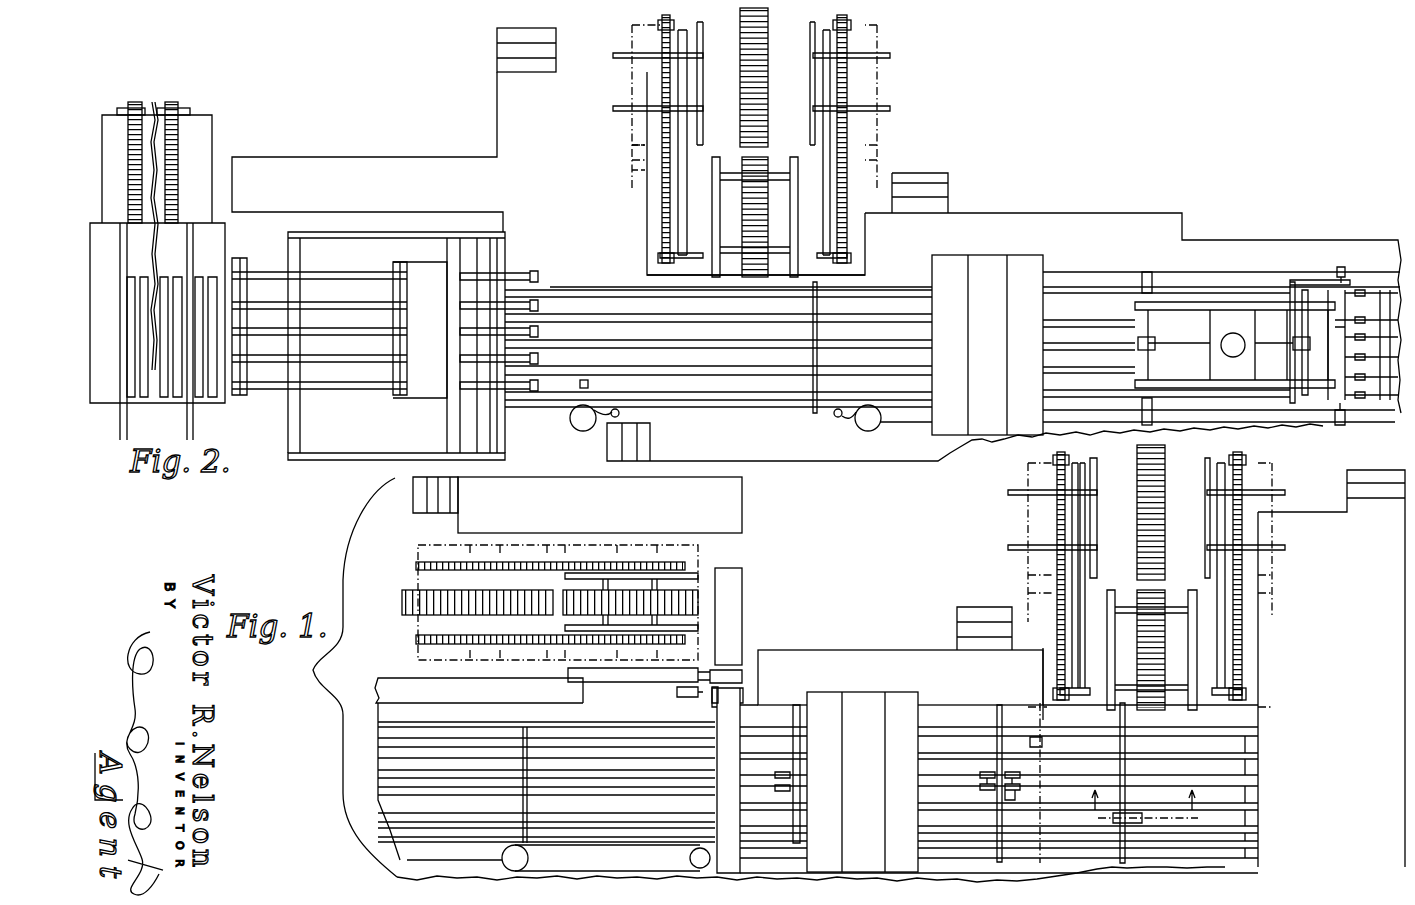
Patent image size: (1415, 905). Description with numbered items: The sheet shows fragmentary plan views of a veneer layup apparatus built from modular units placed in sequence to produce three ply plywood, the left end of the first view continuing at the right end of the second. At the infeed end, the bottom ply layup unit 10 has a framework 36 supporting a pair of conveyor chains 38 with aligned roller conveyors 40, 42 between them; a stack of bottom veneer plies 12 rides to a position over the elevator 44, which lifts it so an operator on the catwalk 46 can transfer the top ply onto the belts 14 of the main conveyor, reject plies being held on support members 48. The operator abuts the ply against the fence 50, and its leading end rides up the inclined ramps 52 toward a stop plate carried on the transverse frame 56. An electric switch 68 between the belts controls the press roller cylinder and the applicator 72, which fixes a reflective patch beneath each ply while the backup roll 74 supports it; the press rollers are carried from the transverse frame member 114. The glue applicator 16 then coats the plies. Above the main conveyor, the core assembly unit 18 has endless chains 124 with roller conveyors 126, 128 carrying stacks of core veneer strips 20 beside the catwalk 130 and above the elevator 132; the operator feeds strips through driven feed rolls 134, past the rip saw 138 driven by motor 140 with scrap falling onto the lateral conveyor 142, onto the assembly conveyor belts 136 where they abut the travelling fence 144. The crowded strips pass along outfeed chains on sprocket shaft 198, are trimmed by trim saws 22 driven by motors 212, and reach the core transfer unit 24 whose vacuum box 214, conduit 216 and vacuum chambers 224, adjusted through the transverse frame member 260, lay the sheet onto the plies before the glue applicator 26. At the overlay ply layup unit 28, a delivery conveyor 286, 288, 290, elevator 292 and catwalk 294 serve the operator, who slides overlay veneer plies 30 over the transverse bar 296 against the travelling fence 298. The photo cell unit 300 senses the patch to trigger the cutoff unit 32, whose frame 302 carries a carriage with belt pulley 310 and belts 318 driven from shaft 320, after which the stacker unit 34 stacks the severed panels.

In FIG. 1, the bottom ply layup unit 10 is at (946, 542).
In FIG. 1, the bottom veneer plies 12 is at (1275, 575).
In FIG. 1, the main conveyor belts 14 is at (1027, 792).
In FIG. 1, the glue applicator 16 is at (874, 668).
In FIG. 1, the core assembly unit 18 is at (807, 568).
In FIG. 1, the core veneer strips 20 is at (448, 552).
In FIG. 2, the trim saws 22 is at (1328, 332).
In FIG. 2, the core transfer unit 24 is at (1133, 298).
In FIG. 2, the glue applicator 26 is at (1060, 253).
In FIG. 2, the overlay ply layup unit 28 is at (798, 142).
In FIG. 2, the overlay veneer plies 30 is at (632, 172).
In FIG. 2, the cutoff unit 32 is at (411, 266).
In FIG. 2, the stacker unit 34 is at (251, 107).
In FIG. 1, the framework 36 is at (1166, 571).
In FIG. 1, the conveyor chains 38 is at (1057, 530).
In FIG. 1, the roller conveyor 40 is at (1145, 533).
In FIG. 1, the roller conveyor 42 is at (1138, 598).
In FIG. 1, the elevator 44 is at (1192, 595).
In FIG. 1, the catwalk 46 is at (1224, 668).
In FIG. 1, the support members 48 is at (1095, 505).
In FIG. 1, the fence 50 is at (1160, 843).
In FIG. 1, the inclined ramps 52 is at (1042, 742).
In FIG. 1, the transverse frame 56 is at (998, 845).
In FIG. 1, the electric switch 68 is at (1005, 796).
In FIG. 1, the applicator 72 is at (1130, 822).
In FIG. 1, the backup roll 74 is at (1128, 813).
In FIG. 1, the transverse frame member 114 is at (793, 718).
In FIG. 1, the endless chains 124 is at (416, 566).
In FIG. 1, the roller conveyor 126 is at (402, 605).
In FIG. 1, the roller conveyor 128 is at (700, 603).
In FIG. 1, the catwalk 130 is at (715, 522).
In FIG. 1, the elevator 132 is at (700, 628).
In FIG. 1, the feed rolls 134 is at (635, 684).
In FIG. 1, the assembly conveyor belts 136 is at (598, 825).
In FIG. 1, the rip saw 138 is at (712, 700).
In FIG. 1, the electric motor 140 is at (677, 694).
In FIG. 1, the lateral conveyor 142 is at (740, 862).
In FIG. 1, the travelling fence 144 is at (594, 848).
In FIG. 2, the sprocket shaft 198 is at (1305, 398).
In FIG. 2, the electric motors 212 is at (1341, 267).
In FIG. 2, the vacuum box 214 is at (1212, 330).
In FIG. 2, the conduit 216 is at (1221, 350).
In FIG. 2, the vacuum chambers 224 is at (1202, 382).
In FIG. 2, the transverse frame member 260 is at (1152, 425).
In FIG. 2, the delivery conveyor 286 is at (847, 86).
In FIG. 2, the delivery conveyor 288 is at (768, 64).
In FIG. 2, the delivery conveyor 290 is at (762, 165).
In FIG. 2, the elevator 292 is at (716, 157).
In FIG. 2, the operator catwalk 294 is at (512, 116).
In FIG. 2, the transverse bar 296 is at (814, 418).
In FIG. 2, the travelling fence 298 is at (735, 410).
In FIG. 2, the lamp and photo cell unit 300 is at (588, 380).
In FIG. 2, the supporting frame 302 is at (375, 456).
In FIG. 2, the belt pulley 310 is at (393, 398).
In FIG. 2, the continuous belts 318 is at (370, 304).
In FIG. 2, the shaft 320 is at (535, 286).